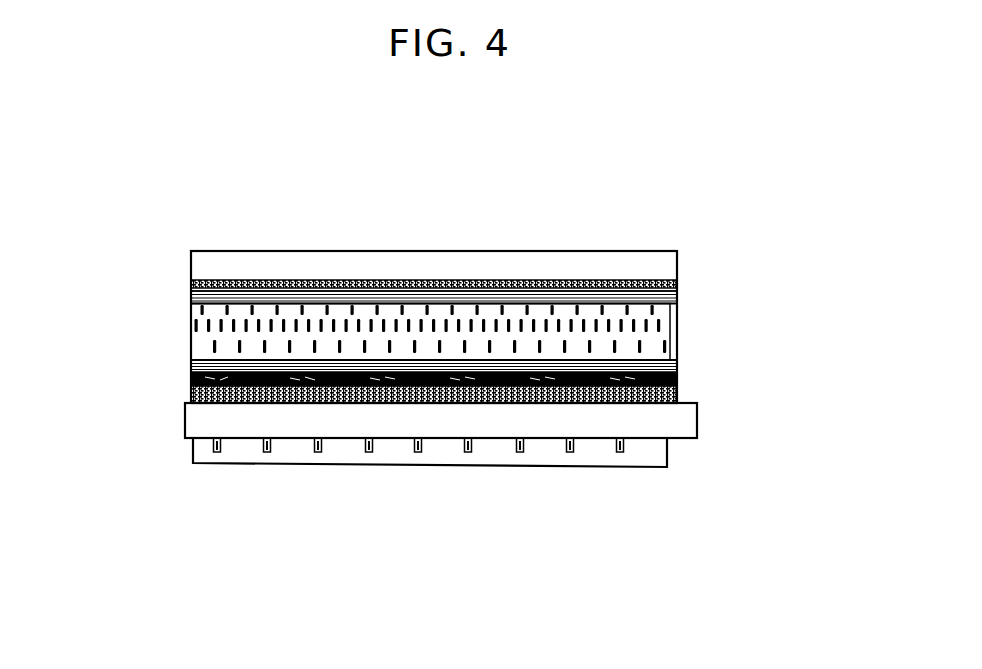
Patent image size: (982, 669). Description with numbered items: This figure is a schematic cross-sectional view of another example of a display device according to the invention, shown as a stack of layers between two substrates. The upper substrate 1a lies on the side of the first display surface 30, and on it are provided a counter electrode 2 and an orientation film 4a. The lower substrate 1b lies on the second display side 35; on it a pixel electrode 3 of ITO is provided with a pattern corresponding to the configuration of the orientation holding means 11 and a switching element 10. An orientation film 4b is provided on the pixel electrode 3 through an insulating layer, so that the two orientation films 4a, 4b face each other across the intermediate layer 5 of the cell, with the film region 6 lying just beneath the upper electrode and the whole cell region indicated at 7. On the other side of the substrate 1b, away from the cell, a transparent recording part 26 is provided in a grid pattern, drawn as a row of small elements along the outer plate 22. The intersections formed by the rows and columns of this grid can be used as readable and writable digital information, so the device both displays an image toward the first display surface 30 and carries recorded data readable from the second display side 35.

The substrate 1a is at (658, 272).
The substrate 1b is at (685, 427).
The counter electrode 2 is at (658, 287).
The pixel electrode 3 is at (667, 400).
The orientation film 4a is at (675, 305).
The orientation film 4b is at (667, 376).
The liquid crystal layer 5 is at (463, 312).
The alignment film 6 is at (532, 310).
The liquid crystal cell 7 is at (189, 334).
The switching element 10 is at (187, 377).
The orientation holding means 11 is at (197, 397).
The backlight plate 22 is at (492, 453).
The transparent recording part 26 is at (320, 445).
The first display surface 30 is at (447, 190).
The second display side 35 is at (442, 507).